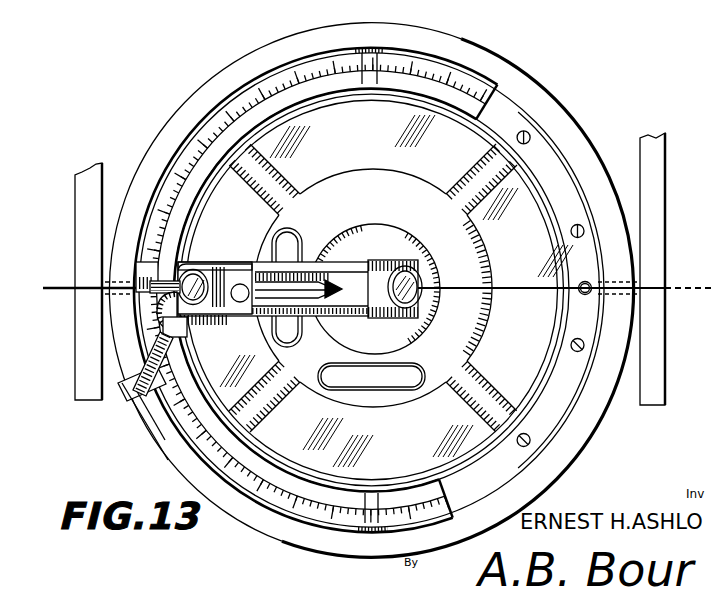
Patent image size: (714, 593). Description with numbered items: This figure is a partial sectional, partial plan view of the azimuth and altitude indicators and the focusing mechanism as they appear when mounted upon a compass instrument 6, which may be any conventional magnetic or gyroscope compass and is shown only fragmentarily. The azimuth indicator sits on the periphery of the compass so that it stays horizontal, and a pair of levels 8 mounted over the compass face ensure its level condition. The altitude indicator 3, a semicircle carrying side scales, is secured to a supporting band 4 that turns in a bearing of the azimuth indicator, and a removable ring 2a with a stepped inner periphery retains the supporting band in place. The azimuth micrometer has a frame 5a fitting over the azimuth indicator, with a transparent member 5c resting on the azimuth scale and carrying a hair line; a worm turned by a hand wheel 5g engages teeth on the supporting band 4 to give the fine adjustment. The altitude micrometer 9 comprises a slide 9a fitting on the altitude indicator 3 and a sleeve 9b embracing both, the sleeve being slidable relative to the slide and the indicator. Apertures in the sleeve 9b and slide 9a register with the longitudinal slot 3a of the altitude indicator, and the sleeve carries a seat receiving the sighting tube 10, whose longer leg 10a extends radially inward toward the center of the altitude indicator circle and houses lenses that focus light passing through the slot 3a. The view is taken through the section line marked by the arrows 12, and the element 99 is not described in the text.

The removable ring 2a is at (440, 72).
The supporting band 4 is at (480, 58).
The compass instrument 6 is at (545, 195).
The levels 8 is at (337, 372).
The altitude micrometer 9 is at (200, 266).
The slide 9a is at (243, 284).
The sleeve 9b is at (190, 263).
The sighting tube 10 is at (302, 270).
The longer leg of sighting tube 10a is at (412, 280).
The altitude indicator 3 is at (315, 278).
The longitudinal slot 3a is at (330, 286).
The transparent member 5c is at (137, 272).
The frame 5a is at (170, 330).
The bracket 99 is at (175, 340).
The hand wheel 5g is at (135, 392).
The section line 12 is at (55, 300).